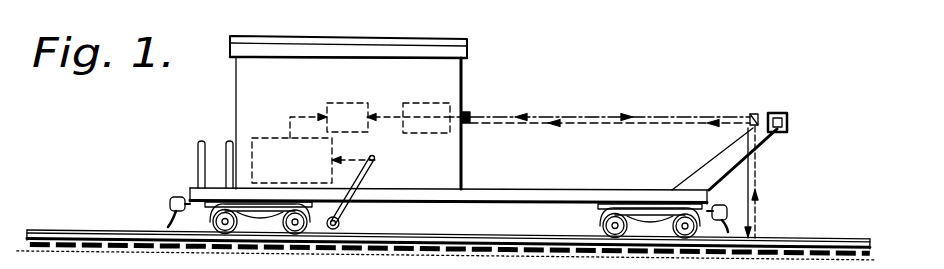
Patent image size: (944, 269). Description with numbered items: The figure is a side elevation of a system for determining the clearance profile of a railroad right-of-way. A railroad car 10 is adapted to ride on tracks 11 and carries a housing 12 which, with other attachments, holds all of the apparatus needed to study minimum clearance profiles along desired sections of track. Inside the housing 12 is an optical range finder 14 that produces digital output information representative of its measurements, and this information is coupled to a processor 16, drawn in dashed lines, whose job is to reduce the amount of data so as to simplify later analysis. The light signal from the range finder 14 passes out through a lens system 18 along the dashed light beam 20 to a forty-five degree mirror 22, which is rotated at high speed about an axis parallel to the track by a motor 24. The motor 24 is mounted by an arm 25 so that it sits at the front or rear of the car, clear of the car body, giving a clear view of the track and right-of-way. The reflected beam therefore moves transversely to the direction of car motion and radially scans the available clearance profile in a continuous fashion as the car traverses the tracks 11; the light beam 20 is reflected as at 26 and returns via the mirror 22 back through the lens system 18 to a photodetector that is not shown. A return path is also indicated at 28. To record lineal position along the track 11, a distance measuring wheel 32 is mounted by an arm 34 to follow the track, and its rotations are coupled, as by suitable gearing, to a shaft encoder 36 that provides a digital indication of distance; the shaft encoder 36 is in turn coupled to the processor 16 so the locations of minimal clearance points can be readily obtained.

The railroad car 10 is at (535, 197).
The tracks 11 is at (488, 231).
The housing 12 is at (463, 69).
The optical range finder 14 is at (463, 103).
The processor 16 is at (370, 106).
The lens system 18 is at (469, 126).
The light beam 20 is at (580, 114).
The 45° mirror 22 is at (756, 114).
The motor 24 is at (788, 116).
The arm 25 is at (737, 156).
The reflected light beam 26 is at (758, 239).
The reflected beam 28 is at (587, 125).
The distance measuring wheel 32 is at (341, 223).
The arm 34 is at (352, 206).
The shaft encoder 36 is at (261, 138).